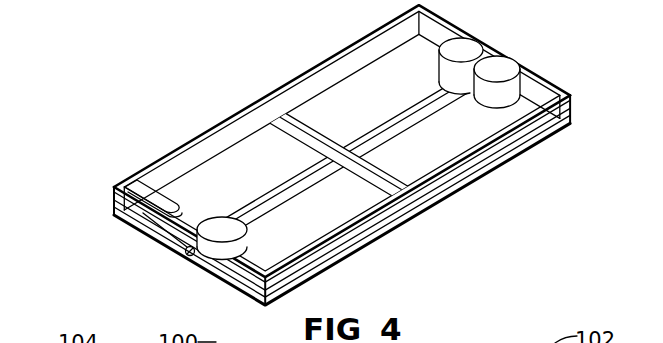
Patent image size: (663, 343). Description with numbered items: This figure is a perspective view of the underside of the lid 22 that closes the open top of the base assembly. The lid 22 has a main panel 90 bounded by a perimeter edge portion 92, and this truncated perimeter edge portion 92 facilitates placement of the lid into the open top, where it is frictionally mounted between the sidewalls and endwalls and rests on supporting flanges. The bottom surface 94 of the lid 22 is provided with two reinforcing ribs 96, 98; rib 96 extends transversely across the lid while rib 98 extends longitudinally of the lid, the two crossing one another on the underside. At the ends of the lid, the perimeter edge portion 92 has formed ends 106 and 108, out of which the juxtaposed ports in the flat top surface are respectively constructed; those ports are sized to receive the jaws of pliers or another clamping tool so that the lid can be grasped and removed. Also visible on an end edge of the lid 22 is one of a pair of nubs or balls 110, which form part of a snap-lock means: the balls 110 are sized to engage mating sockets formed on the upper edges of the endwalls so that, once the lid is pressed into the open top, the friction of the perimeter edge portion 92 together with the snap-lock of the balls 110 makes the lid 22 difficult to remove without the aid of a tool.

The lid 22 is at (438, 226).
The main panel 90 is at (233, 177).
The perimeter edge portion 92 is at (148, 215).
The bottom surface 94 is at (278, 147).
The reinforcing rib 96 is at (317, 133).
The reinforcing rib 98 is at (440, 90).
The formed end 106 is at (462, 45).
The formed end 108 is at (185, 212).
The nub or ball 110 is at (190, 250).